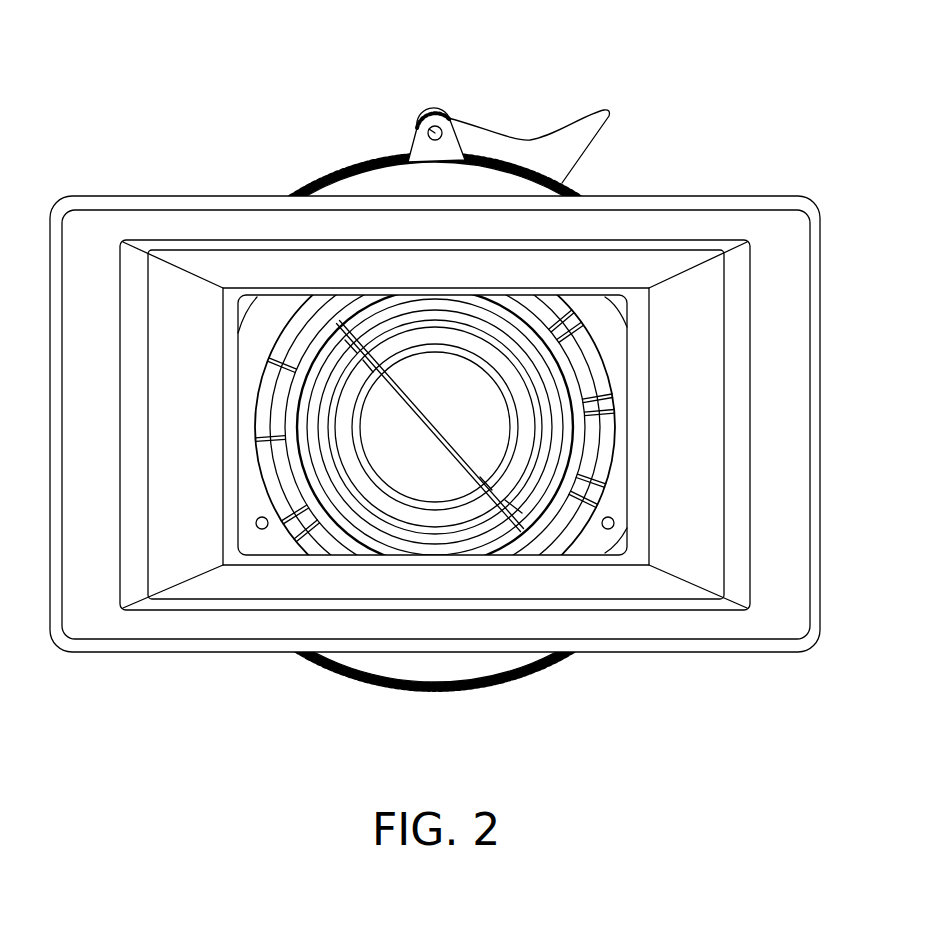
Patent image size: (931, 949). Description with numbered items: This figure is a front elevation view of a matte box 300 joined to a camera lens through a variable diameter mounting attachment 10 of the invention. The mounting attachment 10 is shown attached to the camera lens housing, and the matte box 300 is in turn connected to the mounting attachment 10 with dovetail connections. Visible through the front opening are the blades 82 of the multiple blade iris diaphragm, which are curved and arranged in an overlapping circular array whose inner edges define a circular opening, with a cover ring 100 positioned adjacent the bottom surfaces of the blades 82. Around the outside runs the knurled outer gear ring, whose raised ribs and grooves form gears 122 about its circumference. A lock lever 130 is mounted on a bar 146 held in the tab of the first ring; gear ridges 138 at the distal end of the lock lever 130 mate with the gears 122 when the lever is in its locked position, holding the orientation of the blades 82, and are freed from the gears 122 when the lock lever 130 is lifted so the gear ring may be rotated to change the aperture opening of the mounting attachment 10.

The variable diameter mounting attachment 10 is at (553, 665).
The blades 82 is at (315, 532).
The cover ring 100 is at (502, 188).
The gears 122 is at (322, 175).
The lock lever 130 is at (503, 130).
The gear ridges 138 is at (437, 110).
The bar 146 is at (428, 130).
The matte box 300 is at (753, 195).